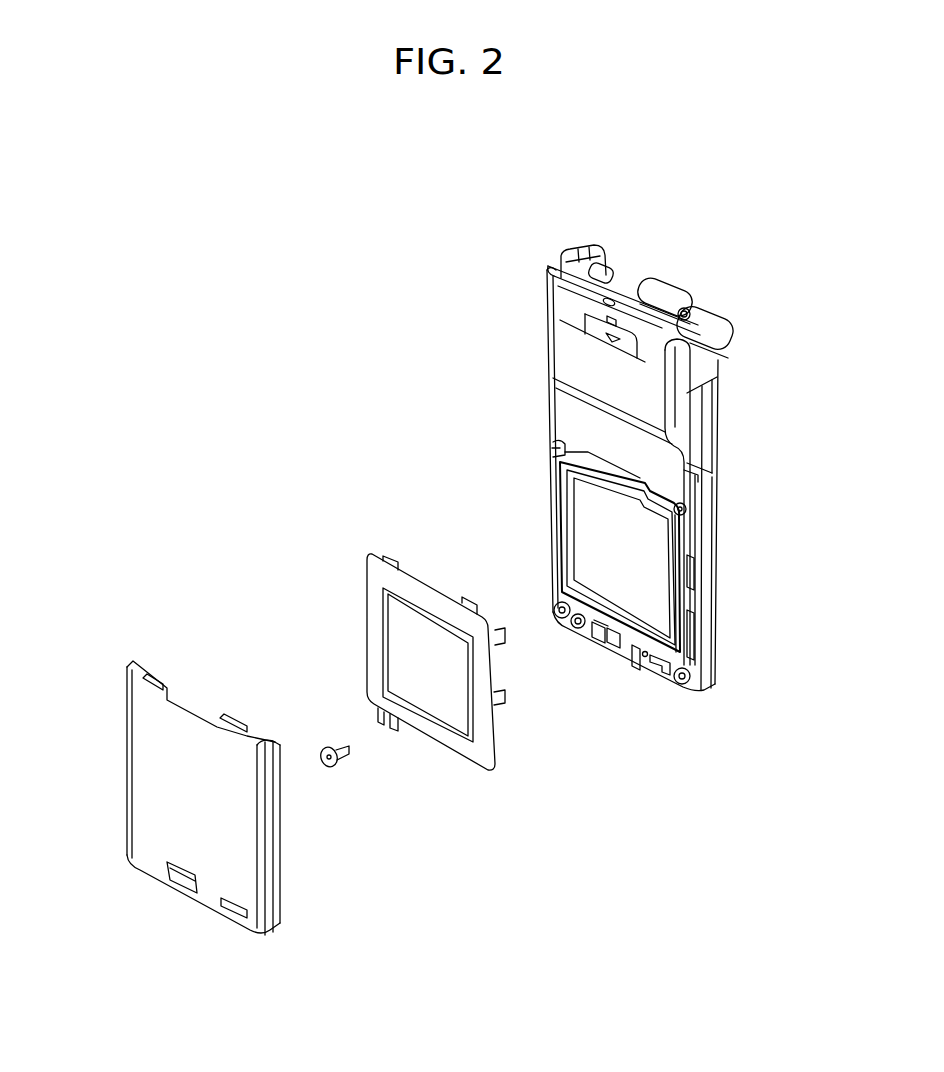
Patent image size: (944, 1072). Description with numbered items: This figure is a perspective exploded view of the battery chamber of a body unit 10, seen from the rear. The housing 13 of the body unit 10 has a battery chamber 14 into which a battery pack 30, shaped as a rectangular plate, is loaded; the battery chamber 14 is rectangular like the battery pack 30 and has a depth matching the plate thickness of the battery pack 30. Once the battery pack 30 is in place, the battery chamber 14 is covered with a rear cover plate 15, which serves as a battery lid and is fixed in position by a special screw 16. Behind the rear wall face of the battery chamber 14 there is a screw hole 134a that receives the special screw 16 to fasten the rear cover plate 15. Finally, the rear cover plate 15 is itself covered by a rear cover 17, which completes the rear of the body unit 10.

The body unit 10 is at (757, 340).
The housing 13 is at (707, 512).
The battery chamber 14 is at (573, 523).
The screw hole 134a is at (558, 630).
The rear cover plate 15 is at (350, 580).
The special screw 16 is at (332, 767).
The rear cover 17 is at (112, 707).
The battery pack 30 is at (653, 572).